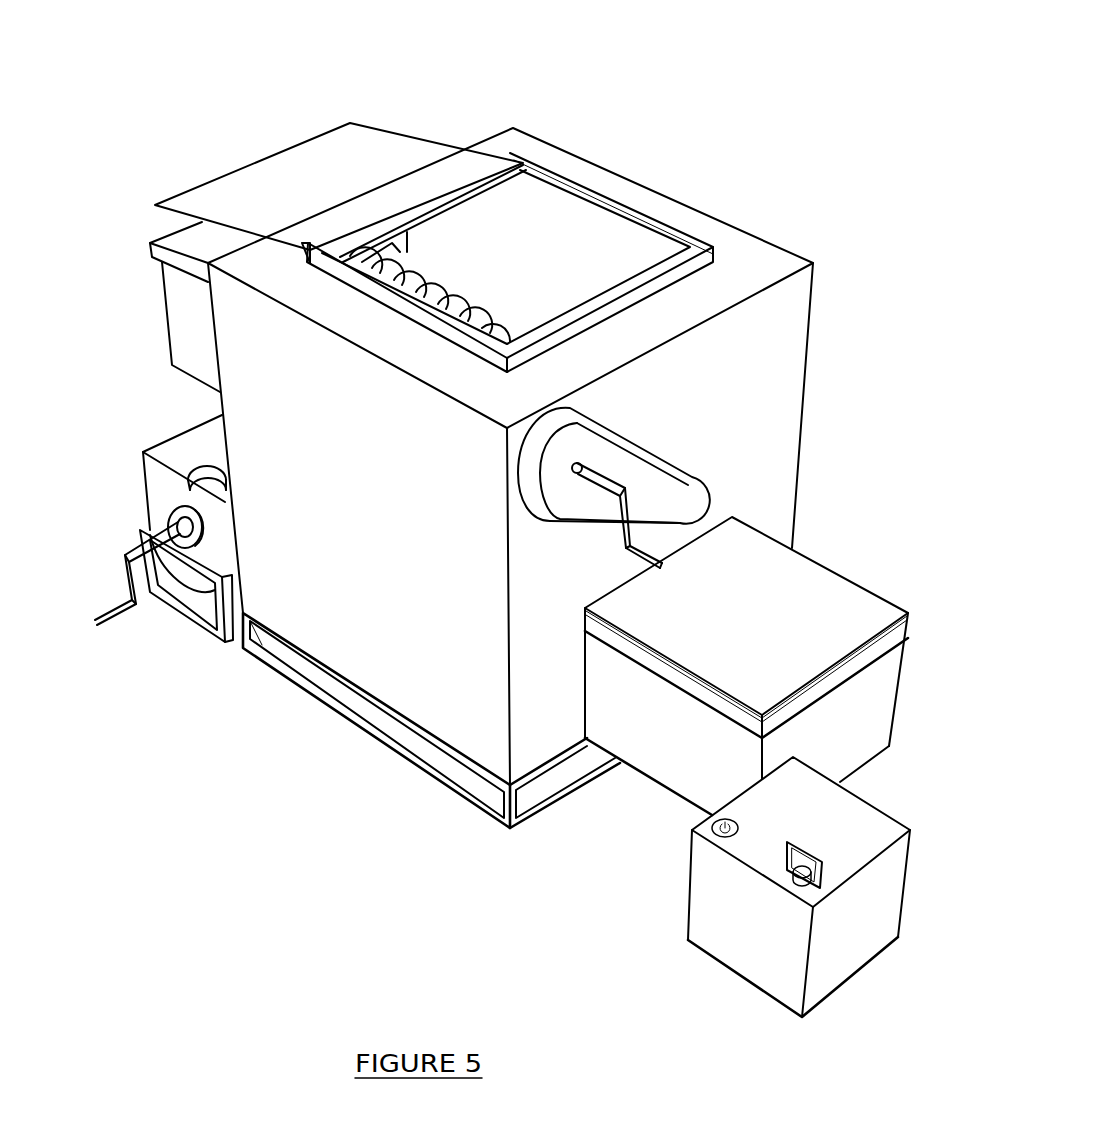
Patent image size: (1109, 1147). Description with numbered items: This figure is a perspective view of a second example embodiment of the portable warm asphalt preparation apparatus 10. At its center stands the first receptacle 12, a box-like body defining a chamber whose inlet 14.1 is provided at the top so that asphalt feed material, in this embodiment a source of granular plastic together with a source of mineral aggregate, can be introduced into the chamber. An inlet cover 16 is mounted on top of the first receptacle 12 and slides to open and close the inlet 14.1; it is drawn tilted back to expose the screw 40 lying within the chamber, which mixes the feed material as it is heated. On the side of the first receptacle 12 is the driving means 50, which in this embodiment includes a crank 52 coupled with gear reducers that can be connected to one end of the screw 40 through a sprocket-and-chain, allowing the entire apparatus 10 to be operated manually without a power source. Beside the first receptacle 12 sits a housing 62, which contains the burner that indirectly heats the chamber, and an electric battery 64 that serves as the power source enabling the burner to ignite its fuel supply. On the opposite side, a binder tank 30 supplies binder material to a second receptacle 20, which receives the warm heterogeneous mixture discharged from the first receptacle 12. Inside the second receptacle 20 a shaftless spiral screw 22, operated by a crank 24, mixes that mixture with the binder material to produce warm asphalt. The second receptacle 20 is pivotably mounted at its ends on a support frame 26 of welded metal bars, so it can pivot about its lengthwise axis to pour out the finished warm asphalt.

The portable warm asphalt preparation apparatus 10 is at (730, 70).
The first receptacle 12 is at (777, 258).
The inlet 14.1 is at (597, 248).
The inlet cover 16 is at (283, 175).
The second receptacle 20 is at (158, 503).
The shaftless spiral screw 22 is at (203, 472).
The crank 24 is at (122, 573).
The support frame 26 is at (188, 607).
The binder tank 30 is at (177, 315).
The screw 40 is at (443, 278).
The driving means 50 is at (542, 538).
The crank 52 is at (627, 530).
The housing 62 is at (883, 685).
The electric battery 64 is at (705, 888).